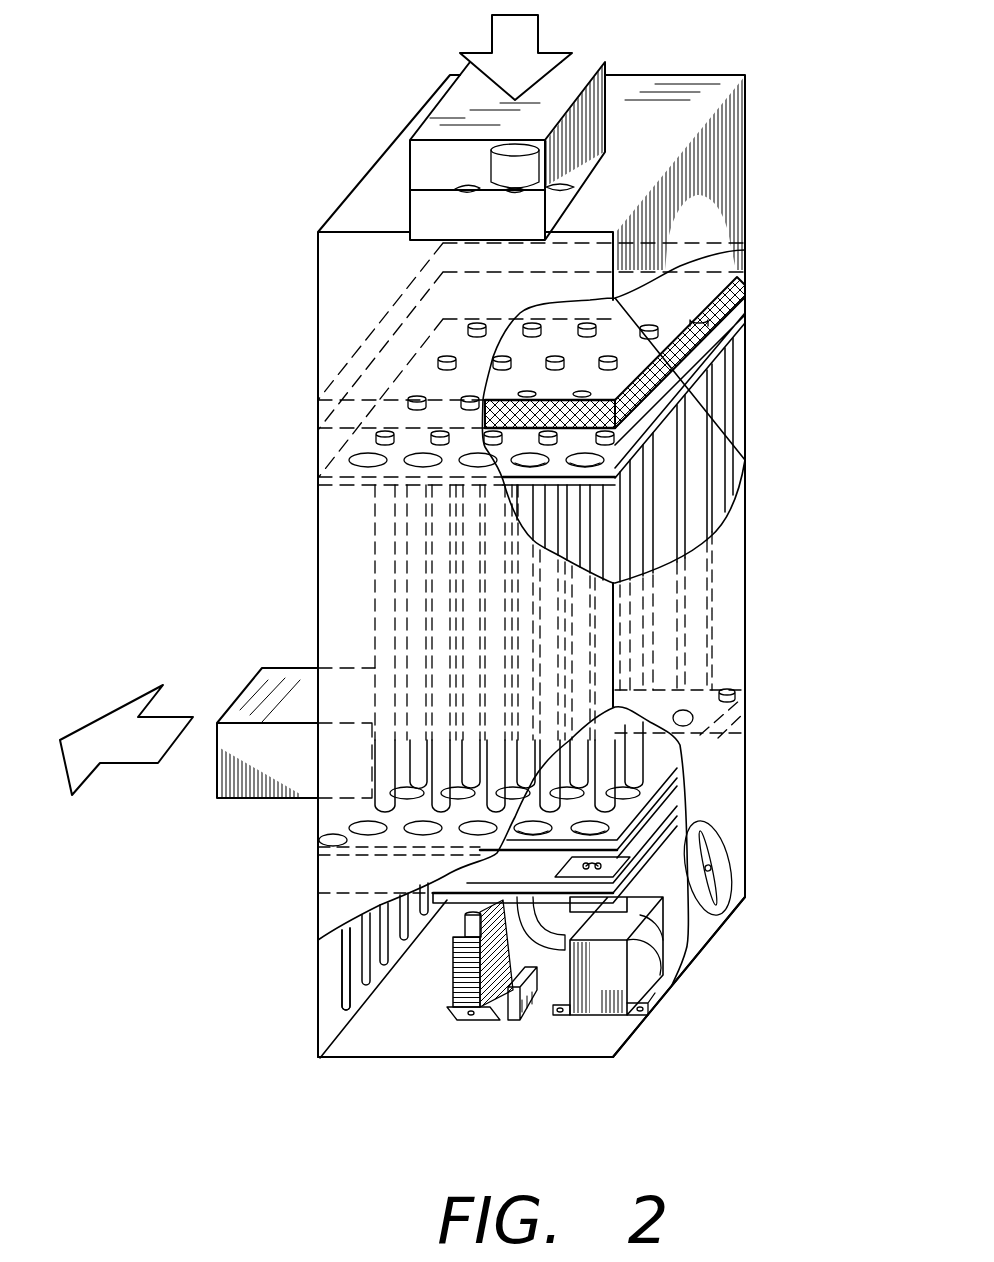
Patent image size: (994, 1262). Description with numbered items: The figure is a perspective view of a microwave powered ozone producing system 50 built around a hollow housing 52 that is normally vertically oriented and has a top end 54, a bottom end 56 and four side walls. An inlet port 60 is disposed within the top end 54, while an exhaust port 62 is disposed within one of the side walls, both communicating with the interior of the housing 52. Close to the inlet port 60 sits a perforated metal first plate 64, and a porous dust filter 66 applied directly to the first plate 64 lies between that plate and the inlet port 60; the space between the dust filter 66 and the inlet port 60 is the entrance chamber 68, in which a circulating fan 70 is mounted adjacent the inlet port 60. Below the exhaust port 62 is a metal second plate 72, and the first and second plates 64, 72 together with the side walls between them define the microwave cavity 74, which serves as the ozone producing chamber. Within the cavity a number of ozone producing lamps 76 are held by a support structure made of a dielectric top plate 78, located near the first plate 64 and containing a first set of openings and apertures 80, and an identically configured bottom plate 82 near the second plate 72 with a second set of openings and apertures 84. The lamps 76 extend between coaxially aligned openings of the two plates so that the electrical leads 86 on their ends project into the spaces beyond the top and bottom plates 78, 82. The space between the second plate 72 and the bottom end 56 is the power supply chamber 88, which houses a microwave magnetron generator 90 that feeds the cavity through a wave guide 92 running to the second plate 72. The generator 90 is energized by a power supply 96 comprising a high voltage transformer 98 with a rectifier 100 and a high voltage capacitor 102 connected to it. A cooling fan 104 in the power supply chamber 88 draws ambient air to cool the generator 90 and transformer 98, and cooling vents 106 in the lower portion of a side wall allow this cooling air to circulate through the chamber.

The ozone producing system 50 is at (826, 171).
The hollow housing 52 is at (752, 136).
The top end 54 is at (357, 195).
The bottom end 56 is at (720, 932).
The inlet port 60 is at (603, 118).
The exhaust port 62 is at (258, 683).
The first plate 64 is at (740, 318).
The porous dust filter 66 is at (700, 282).
The entrance chamber 68 is at (318, 277).
The circulating fan 70 is at (492, 178).
The second plate 72 is at (745, 735).
The microwave cavity 74 is at (318, 592).
The ozone producing lamps 76 is at (697, 442).
The top plate 78 is at (735, 340).
The first set of apertures 80 is at (637, 525).
The bottom plate 82 is at (737, 697).
The second set of apertures 84 is at (580, 793).
The electrical leads 86 is at (438, 361).
The power supply chamber 88 is at (350, 1043).
The microwave magnetron generator 90 is at (607, 907).
The wave guide 92 is at (660, 810).
The power supply 96 is at (625, 1038).
The high voltage transformer 98 is at (573, 1013).
The rectifier 100 is at (513, 1007).
The high voltage capacitor 102 is at (450, 997).
The cooling fan 104 is at (722, 863).
The cooling vents 106 is at (347, 942).